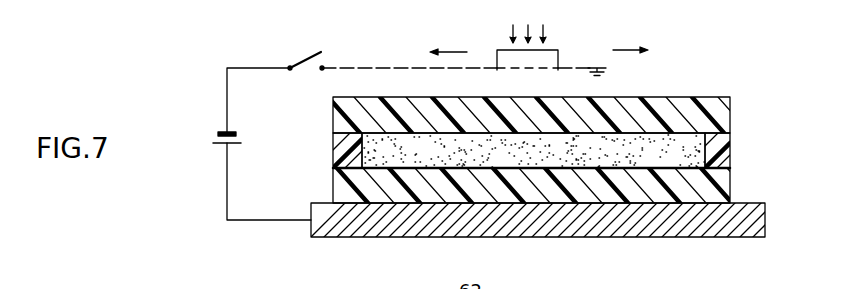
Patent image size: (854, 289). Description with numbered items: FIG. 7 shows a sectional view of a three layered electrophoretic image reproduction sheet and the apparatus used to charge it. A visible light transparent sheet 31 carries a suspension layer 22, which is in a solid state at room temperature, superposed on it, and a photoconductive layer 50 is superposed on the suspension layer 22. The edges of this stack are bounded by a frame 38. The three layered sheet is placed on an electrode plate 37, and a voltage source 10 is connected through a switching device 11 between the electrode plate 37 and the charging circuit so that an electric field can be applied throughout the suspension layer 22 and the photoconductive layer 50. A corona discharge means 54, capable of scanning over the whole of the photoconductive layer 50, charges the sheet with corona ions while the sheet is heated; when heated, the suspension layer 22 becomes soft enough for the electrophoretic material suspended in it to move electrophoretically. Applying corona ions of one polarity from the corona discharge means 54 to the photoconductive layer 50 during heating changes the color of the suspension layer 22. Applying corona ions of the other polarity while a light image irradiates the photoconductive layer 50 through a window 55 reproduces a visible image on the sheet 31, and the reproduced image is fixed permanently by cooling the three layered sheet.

The voltage source 10 is at (220, 131).
The switching device 11 is at (304, 56).
The suspension layer 22 is at (417, 147).
The visible light transparent sheet 31 is at (333, 182).
The electrode plate 37 is at (310, 236).
The frame 38 is at (333, 146).
The photoconductive layer 50 is at (333, 108).
The corona discharge means 54 is at (512, 68).
The window 55 is at (559, 50).